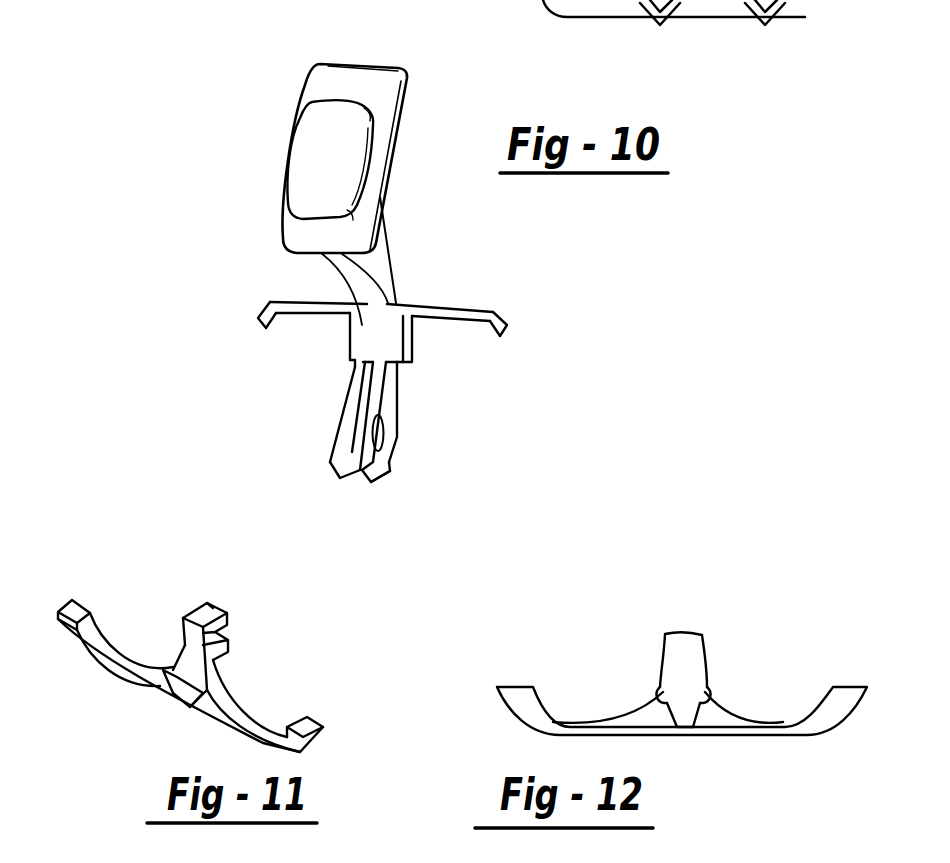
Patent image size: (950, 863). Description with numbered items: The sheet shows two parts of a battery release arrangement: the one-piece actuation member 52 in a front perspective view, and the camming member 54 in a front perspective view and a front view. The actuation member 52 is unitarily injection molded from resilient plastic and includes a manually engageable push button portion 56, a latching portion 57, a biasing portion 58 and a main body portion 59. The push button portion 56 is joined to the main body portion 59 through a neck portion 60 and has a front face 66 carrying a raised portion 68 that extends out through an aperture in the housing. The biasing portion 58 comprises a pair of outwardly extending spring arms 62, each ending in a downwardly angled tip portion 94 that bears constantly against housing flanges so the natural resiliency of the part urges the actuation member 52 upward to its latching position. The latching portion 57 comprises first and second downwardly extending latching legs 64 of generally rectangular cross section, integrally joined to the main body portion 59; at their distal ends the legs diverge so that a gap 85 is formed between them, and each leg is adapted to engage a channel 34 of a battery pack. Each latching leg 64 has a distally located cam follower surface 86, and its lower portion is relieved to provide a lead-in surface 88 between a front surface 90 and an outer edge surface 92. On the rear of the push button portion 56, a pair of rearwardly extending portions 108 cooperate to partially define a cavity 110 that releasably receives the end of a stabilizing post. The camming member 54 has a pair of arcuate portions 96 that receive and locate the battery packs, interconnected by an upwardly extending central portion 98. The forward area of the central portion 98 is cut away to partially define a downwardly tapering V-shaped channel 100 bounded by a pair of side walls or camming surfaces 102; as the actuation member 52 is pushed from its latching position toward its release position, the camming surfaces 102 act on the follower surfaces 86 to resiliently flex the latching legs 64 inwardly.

In FIG. 10, the channel 34 is at (270, 6).
In FIG. 10, the actuation member 52 is at (252, 181).
In FIG. 11, the camming member 54 is at (60, 584).
In FIG. 12, the camming member 54 is at (542, 638).
In FIG. 10, the push button portion 56 is at (414, 78).
In FIG. 10, the latching portion 57 is at (340, 378).
In FIG. 10, the biasing portion 58 is at (429, 294).
In FIG. 10, the main body portion 59 is at (413, 339).
In FIG. 10, the neck portion 60 is at (380, 247).
In FIG. 10, the spring arms 62 is at (313, 298).
In FIG. 10, the latching legs 64 is at (357, 408).
In FIG. 10, the front face 66 is at (340, 77).
In FIG. 10, the raised portion 68 is at (302, 140).
In FIG. 10, the gap 85 is at (350, 484).
In FIG. 10, the cam follower surface 86 is at (330, 469).
In FIG. 10, the lead-in surface 88 is at (385, 461).
In FIG. 10, the front surface 90 is at (358, 482).
In FIG. 10, the outer edge surface 92 is at (382, 453).
In FIG. 10, the tip portion 94 is at (263, 311).
In FIG. 11, the arcuate portions 96 is at (107, 647).
In FIG. 12, the arcuate portions 96 is at (557, 713).
In FIG. 11, the central portion 98 is at (187, 643).
In FIG. 12, the central portion 98 is at (687, 650).
In FIG. 11, the channel 100 is at (177, 713).
In FIG. 12, the channel 100 is at (690, 708).
In FIG. 11, the camming surfaces 102 is at (163, 683).
In FIG. 12, the camming surfaces 102 is at (660, 694).
In FIG. 10, the rearwardly extending portions 108 is at (400, 7).
In FIG. 11, the rearwardly extending portions 108 is at (207, 613).
In FIG. 11, the cavity 110 is at (228, 634).